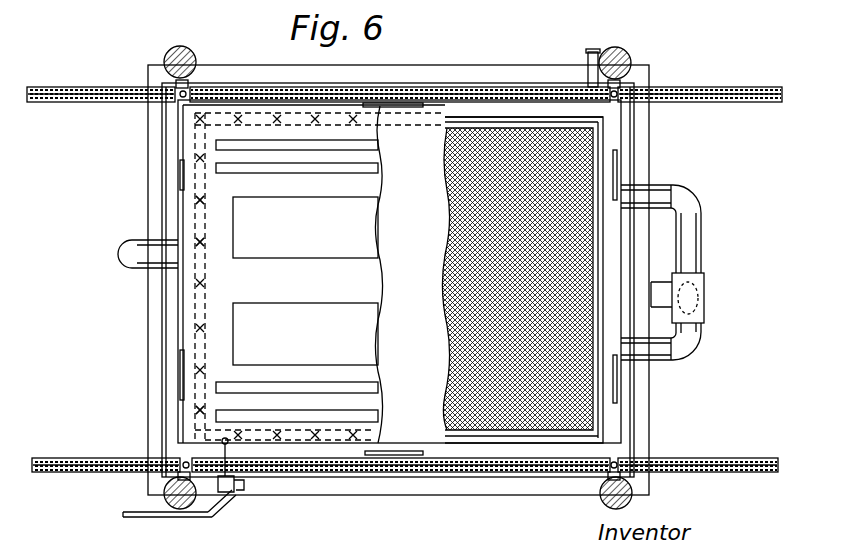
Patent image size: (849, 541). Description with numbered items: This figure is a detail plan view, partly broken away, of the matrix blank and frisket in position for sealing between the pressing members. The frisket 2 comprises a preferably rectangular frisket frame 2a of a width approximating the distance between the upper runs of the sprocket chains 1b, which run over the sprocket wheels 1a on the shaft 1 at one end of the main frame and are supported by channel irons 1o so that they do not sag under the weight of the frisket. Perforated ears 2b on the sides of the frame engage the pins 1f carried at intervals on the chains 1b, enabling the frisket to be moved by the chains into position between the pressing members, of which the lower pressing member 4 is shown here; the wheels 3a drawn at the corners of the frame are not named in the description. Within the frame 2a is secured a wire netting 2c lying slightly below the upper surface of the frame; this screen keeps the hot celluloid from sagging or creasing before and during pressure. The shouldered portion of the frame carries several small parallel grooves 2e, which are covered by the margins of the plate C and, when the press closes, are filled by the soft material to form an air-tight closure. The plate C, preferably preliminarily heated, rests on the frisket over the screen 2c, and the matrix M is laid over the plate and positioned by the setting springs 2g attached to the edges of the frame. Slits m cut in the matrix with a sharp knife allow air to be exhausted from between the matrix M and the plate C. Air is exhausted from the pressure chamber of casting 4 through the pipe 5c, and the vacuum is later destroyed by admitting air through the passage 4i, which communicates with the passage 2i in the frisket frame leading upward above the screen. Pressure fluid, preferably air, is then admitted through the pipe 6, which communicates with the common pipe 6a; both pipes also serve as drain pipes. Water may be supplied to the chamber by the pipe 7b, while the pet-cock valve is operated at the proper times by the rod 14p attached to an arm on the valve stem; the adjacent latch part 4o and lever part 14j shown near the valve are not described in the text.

The shaft 1 is at (312, 76).
The sprocket wheels 1a is at (74, 472).
The sprocket chains 1b is at (70, 103).
The pins 1f is at (175, 88).
The channel irons 1o is at (112, 103).
The frisket 2 is at (180, 296).
The frisket frame 2a is at (498, 110).
The perforated ears 2b is at (185, 93).
The wire netting 2c is at (560, 245).
The grooves 2e is at (456, 118).
The setting springs 2g is at (180, 178).
The passage 2i is at (240, 435).
The wheel 3a is at (170, 54).
The lower pressing member 4 is at (150, 350).
The passage 4i is at (238, 484).
The latch 4o is at (230, 493).
The pipe 5c is at (588, 58).
The pipe 6 is at (660, 188).
The common pipe 6a is at (672, 313).
The pipe 7b is at (136, 248).
The lever 14j is at (210, 508).
The rod 14p is at (150, 517).
The slits m is at (198, 242).
The matrix M is at (299, 274).
The plate C is at (401, 280).